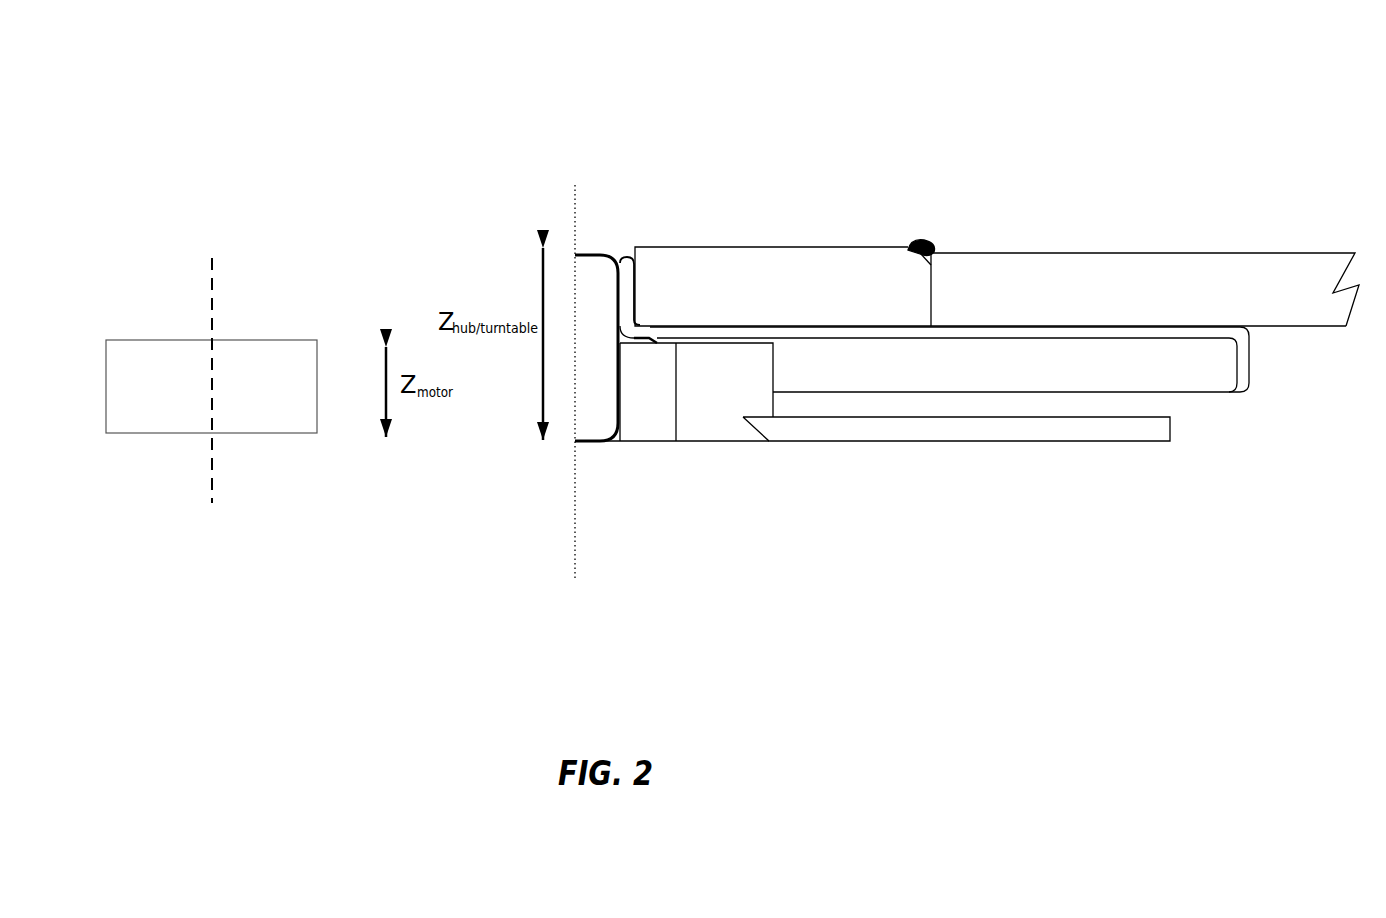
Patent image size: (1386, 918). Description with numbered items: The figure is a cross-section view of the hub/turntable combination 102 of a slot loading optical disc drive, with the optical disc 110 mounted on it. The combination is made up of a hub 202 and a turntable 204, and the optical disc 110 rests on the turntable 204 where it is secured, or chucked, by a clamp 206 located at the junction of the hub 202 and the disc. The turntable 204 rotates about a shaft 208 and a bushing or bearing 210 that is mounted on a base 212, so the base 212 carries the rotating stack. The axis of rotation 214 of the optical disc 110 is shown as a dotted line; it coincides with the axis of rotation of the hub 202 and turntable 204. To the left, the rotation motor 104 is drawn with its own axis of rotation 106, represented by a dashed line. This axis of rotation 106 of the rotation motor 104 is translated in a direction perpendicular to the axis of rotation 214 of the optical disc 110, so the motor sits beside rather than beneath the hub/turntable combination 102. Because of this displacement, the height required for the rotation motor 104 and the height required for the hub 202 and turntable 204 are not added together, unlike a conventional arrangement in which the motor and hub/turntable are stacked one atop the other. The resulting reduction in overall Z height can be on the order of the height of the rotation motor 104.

The hub/turntable combination 102 is at (989, 175).
The rotation motor 104 is at (211, 386).
The axis of rotation 106 is at (212, 258).
The optical disc 110 is at (1058, 282).
The hub 202 is at (713, 268).
The turntable 204 is at (1238, 362).
The clamp 206 is at (919, 242).
The shaft 208 is at (594, 278).
The bushing 210 is at (650, 413).
The base 212 is at (907, 427).
The axis of rotation 214 is at (576, 507).